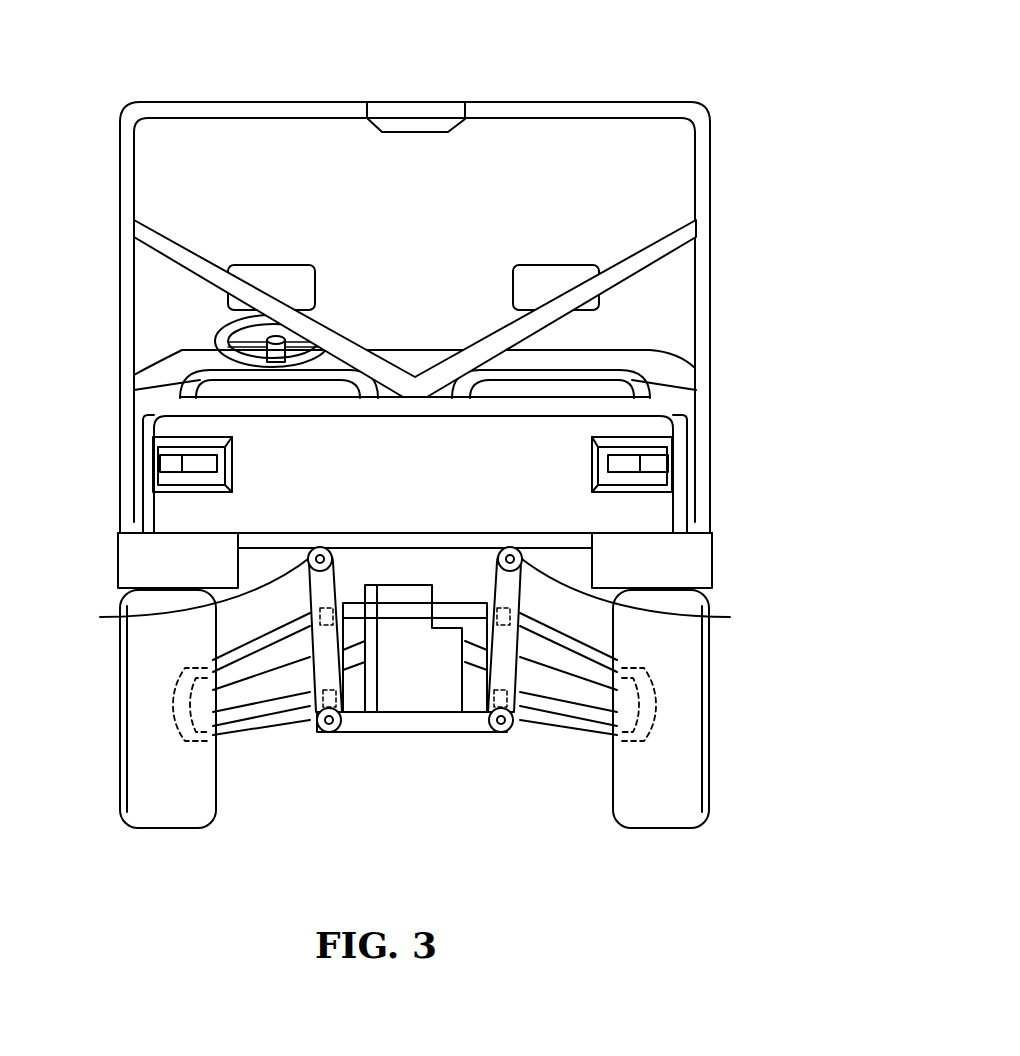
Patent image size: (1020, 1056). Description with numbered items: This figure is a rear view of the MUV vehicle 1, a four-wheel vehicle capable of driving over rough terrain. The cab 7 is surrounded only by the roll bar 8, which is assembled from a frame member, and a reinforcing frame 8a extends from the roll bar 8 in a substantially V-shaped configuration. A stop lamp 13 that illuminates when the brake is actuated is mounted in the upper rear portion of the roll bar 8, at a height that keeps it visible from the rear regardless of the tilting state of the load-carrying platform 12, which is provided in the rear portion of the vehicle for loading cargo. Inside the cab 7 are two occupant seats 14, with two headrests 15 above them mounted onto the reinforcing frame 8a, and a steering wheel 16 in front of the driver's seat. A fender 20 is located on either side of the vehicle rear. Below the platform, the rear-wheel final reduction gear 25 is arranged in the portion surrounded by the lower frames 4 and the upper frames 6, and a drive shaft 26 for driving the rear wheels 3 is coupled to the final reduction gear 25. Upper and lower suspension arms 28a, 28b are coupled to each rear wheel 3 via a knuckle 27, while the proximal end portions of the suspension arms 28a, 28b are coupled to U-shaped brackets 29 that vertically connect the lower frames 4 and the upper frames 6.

The MUV vehicle 1 is at (762, 81).
The rear wheels 3 is at (168, 822).
The lower frames 4 is at (329, 733).
The upper frames 6 is at (415, 593).
The cab 7 is at (425, 214).
The roll bar 8 is at (712, 181).
The reinforcing frame 8a is at (177, 244).
The load-carrying platform 12 is at (673, 445).
The stop lamp 13 is at (455, 128).
The occupant seats 14 is at (134, 390).
The headrests 15 is at (273, 265).
The steering wheel 16 is at (217, 331).
The fender 20 is at (118, 562).
The rear-wheel final reduction gear 25 is at (413, 697).
The drive shaft 26 is at (253, 692).
The knuckle 27 is at (173, 708).
The upper suspension arm 28a is at (248, 648).
The lower suspension arm 28b is at (227, 736).
The U-shaped brackets 29 is at (333, 677).